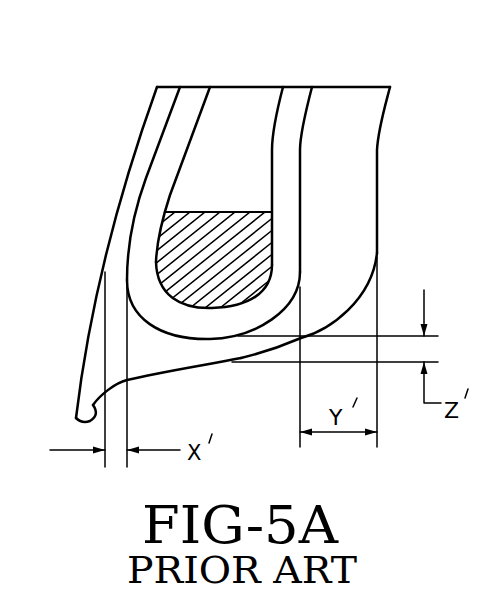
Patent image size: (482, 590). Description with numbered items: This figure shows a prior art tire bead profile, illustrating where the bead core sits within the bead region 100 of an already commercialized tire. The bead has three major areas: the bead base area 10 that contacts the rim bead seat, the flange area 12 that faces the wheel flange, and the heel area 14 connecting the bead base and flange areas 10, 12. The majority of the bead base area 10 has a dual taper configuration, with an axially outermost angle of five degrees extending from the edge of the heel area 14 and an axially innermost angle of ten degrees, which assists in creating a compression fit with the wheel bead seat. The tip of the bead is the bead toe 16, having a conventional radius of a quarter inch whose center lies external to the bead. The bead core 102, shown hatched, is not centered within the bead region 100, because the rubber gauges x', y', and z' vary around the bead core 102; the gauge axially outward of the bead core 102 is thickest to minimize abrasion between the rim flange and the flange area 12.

The prior art bead region 100 is at (114, 122).
The flange area 12 is at (385, 132).
The bead core 102 is at (200, 265).
The heel area 14 is at (352, 318).
The bead base area 10 is at (188, 375).
The bead toe 16 is at (86, 426).